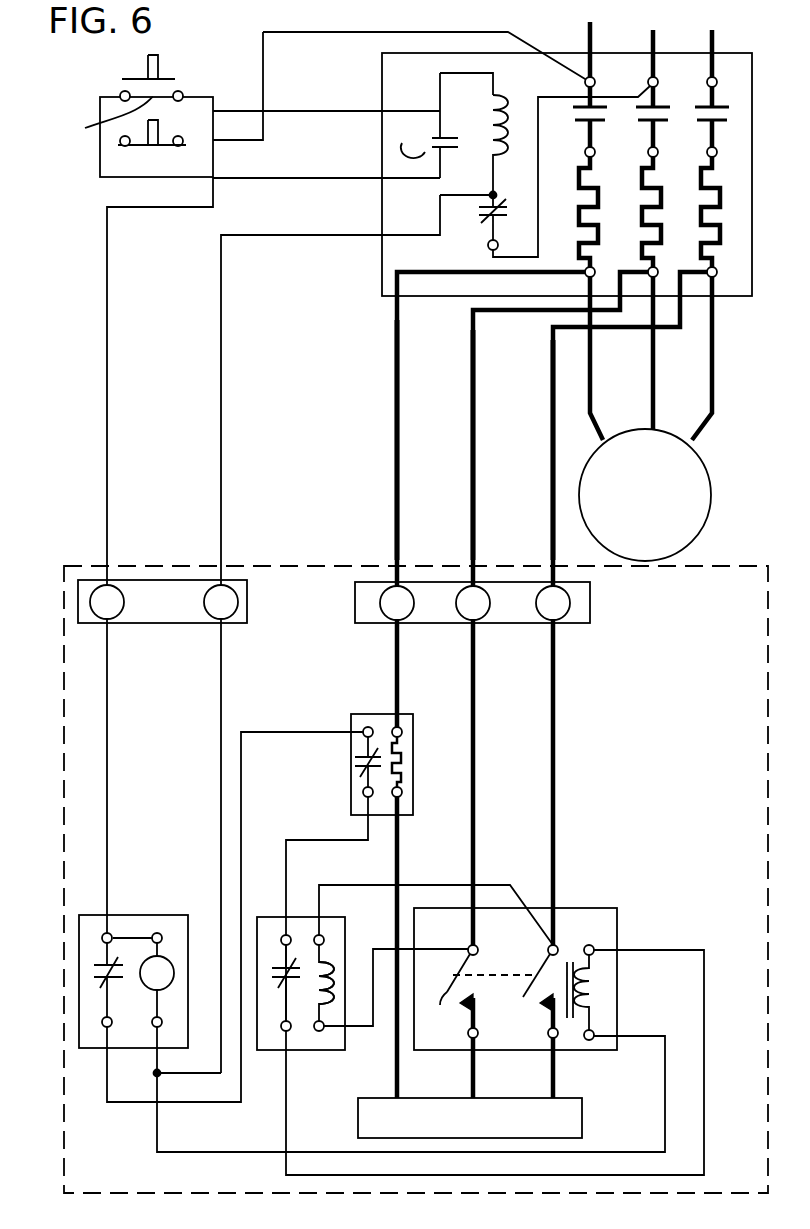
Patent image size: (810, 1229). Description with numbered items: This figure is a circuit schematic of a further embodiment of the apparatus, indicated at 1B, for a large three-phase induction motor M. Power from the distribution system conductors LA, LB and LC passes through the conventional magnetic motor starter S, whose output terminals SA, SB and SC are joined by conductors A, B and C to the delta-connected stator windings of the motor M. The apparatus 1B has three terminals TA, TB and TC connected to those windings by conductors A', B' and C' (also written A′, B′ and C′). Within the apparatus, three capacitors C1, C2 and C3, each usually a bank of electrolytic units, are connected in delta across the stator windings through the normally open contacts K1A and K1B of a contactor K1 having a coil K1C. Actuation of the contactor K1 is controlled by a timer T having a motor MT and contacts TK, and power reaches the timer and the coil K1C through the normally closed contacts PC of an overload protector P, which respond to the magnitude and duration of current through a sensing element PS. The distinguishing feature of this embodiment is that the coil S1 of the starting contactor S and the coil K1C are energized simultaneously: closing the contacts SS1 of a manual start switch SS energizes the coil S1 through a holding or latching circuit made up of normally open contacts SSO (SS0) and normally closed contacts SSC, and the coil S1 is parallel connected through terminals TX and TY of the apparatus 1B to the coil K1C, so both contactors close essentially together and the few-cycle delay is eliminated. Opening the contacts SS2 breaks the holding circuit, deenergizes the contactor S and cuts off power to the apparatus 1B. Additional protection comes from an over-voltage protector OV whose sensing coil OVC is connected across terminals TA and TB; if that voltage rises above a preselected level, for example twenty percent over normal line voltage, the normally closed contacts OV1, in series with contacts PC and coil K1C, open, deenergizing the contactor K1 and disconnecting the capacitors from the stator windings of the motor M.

The manual start switch SS is at (186, 70).
The contacts of manual start switch SS1 is at (85, 128).
The contacts of manual start switch SS2 is at (137, 148).
The magnetic motor starter S is at (753, 190).
The coil of starting contactor S1 is at (510, 123).
The normally open contacts SSO is at (422, 138).
The normally open contacts SS0 is at (422, 132).
The normally closed contacts SSC is at (482, 217).
The conductor LC is at (586, 28).
The conductor LB is at (650, 42).
The conductor LA is at (709, 42).
The starter output terminal SC is at (592, 270).
The starter output terminal SB is at (655, 270).
The starter output terminal SA is at (717, 272).
The conductor C is at (613, 358).
The conductor B is at (673, 353).
The conductor A is at (727, 358).
The conductor C' is at (376, 440).
The conductor B' is at (450, 445).
The conductor A' is at (529, 450).
The conductor C′ is at (376, 440).
The conductor B′ is at (450, 445).
The conductor A′ is at (529, 450).
The three-phase induction motor M is at (662, 513).
The apparatus 1B is at (305, 562).
The terminal TY is at (107, 602).
The terminal TX is at (221, 602).
The terminal TC is at (397, 603).
The terminal TB is at (473, 603).
The terminal TA is at (553, 603).
The overload protector P is at (362, 712).
The normally closed contacts PC is at (365, 760).
The sensing element PS is at (403, 763).
The timer T is at (157, 915).
The timer contacts TK is at (115, 983).
The timer motor MT is at (165, 958).
The over-voltage protector OV is at (345, 935).
The normally closed contacts OV1 is at (280, 965).
The sensing coil OVC is at (327, 1012).
The contactor K1 is at (618, 933).
The normally open contacts K1A is at (523, 997).
The normally open contacts K1B is at (450, 992).
The coil of contactor K1C is at (597, 1000).
The capacitor C1 is at (396, 1120).
The capacitor C2 is at (473, 1120).
The capacitor C3 is at (548, 1120).